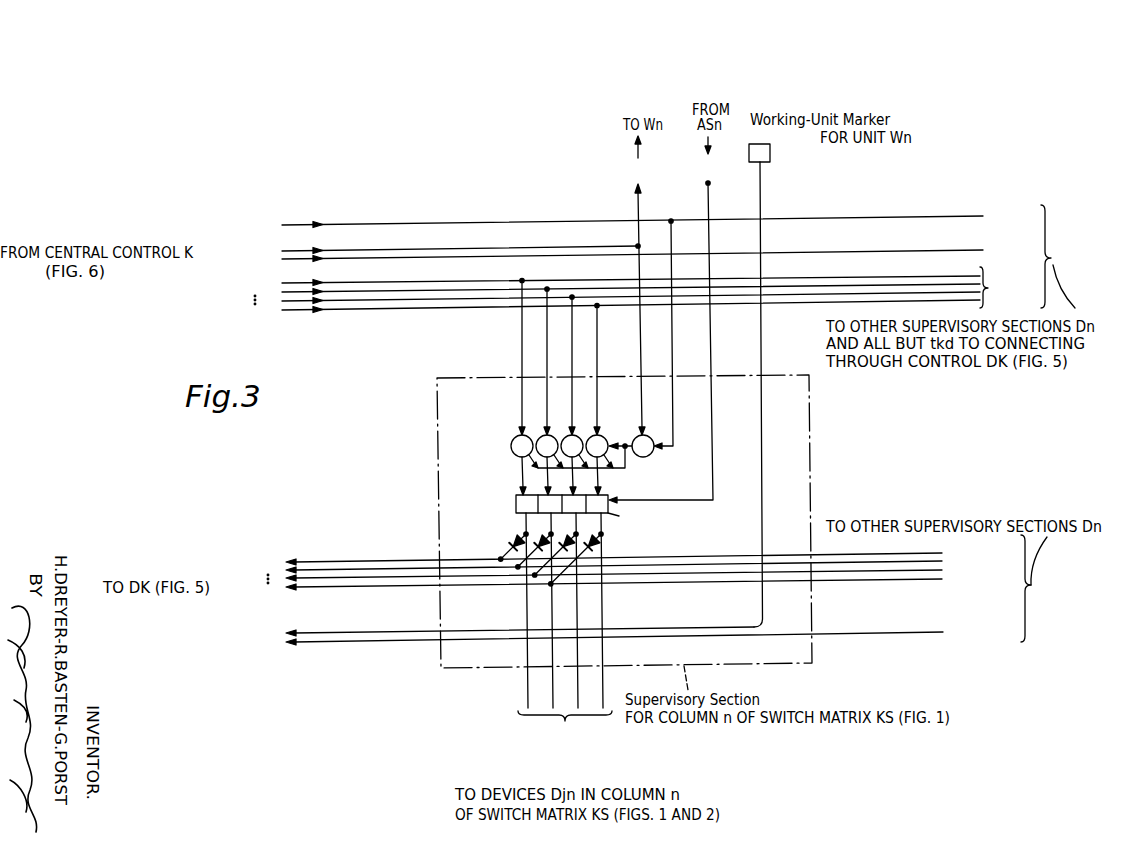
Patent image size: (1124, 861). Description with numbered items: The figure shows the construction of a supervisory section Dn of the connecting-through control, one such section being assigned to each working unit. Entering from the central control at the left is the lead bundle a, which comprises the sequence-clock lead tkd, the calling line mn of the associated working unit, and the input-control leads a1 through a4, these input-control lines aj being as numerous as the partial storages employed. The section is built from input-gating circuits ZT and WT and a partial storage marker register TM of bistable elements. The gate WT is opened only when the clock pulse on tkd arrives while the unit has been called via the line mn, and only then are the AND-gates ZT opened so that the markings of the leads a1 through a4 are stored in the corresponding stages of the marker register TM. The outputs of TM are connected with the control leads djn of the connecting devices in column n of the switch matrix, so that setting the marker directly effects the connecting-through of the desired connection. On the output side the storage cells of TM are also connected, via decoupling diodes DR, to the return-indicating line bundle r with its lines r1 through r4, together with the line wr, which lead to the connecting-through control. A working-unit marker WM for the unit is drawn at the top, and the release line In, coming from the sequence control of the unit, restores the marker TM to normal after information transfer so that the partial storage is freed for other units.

The input-control lead bundle a is at (236, 206).
The sequence-clock pulse lead tkd is at (614, 332).
The calling line mn is at (641, 297).
The input-control lead a1 is at (612, 355).
The input-control lead a4 is at (612, 367).
The input-control lines aj is at (993, 287).
The release line In is at (662, 331).
The working-unit marker WM is at (767, 129).
The supervisory section Dn is at (772, 666).
The AND-gates ZT is at (568, 465).
The input-gating circuit WT is at (591, 458).
The partial storage marker register TM is at (576, 526).
The control leads of connecting devices djn is at (565, 780).
The decoupling diodes DR is at (543, 559).
The return-indicating line bundle r is at (242, 545).
The return-indicating line r1 is at (602, 562).
The return-indicating line r4 is at (602, 587).
The wr,n line wr is at (628, 633).